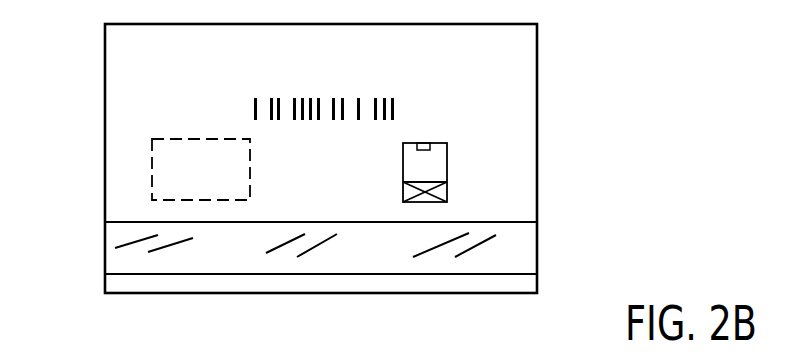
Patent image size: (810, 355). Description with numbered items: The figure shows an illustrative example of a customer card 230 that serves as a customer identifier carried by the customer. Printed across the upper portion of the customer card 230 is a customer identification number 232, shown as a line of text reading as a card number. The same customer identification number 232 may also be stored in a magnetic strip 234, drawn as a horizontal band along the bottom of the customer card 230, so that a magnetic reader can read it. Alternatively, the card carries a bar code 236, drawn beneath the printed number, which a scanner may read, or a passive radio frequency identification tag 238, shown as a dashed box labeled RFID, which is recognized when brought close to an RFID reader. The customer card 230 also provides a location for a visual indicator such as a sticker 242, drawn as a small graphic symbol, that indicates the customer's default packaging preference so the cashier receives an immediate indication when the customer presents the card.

The customer card 230 is at (628, 183).
The customer identification number 232 is at (185, 77).
The magnetic strip 234 is at (115, 261).
The bar code 236 is at (425, 108).
The passive radio frequency identification (RFID) tag 238 is at (152, 170).
The sticker 242 is at (447, 173).